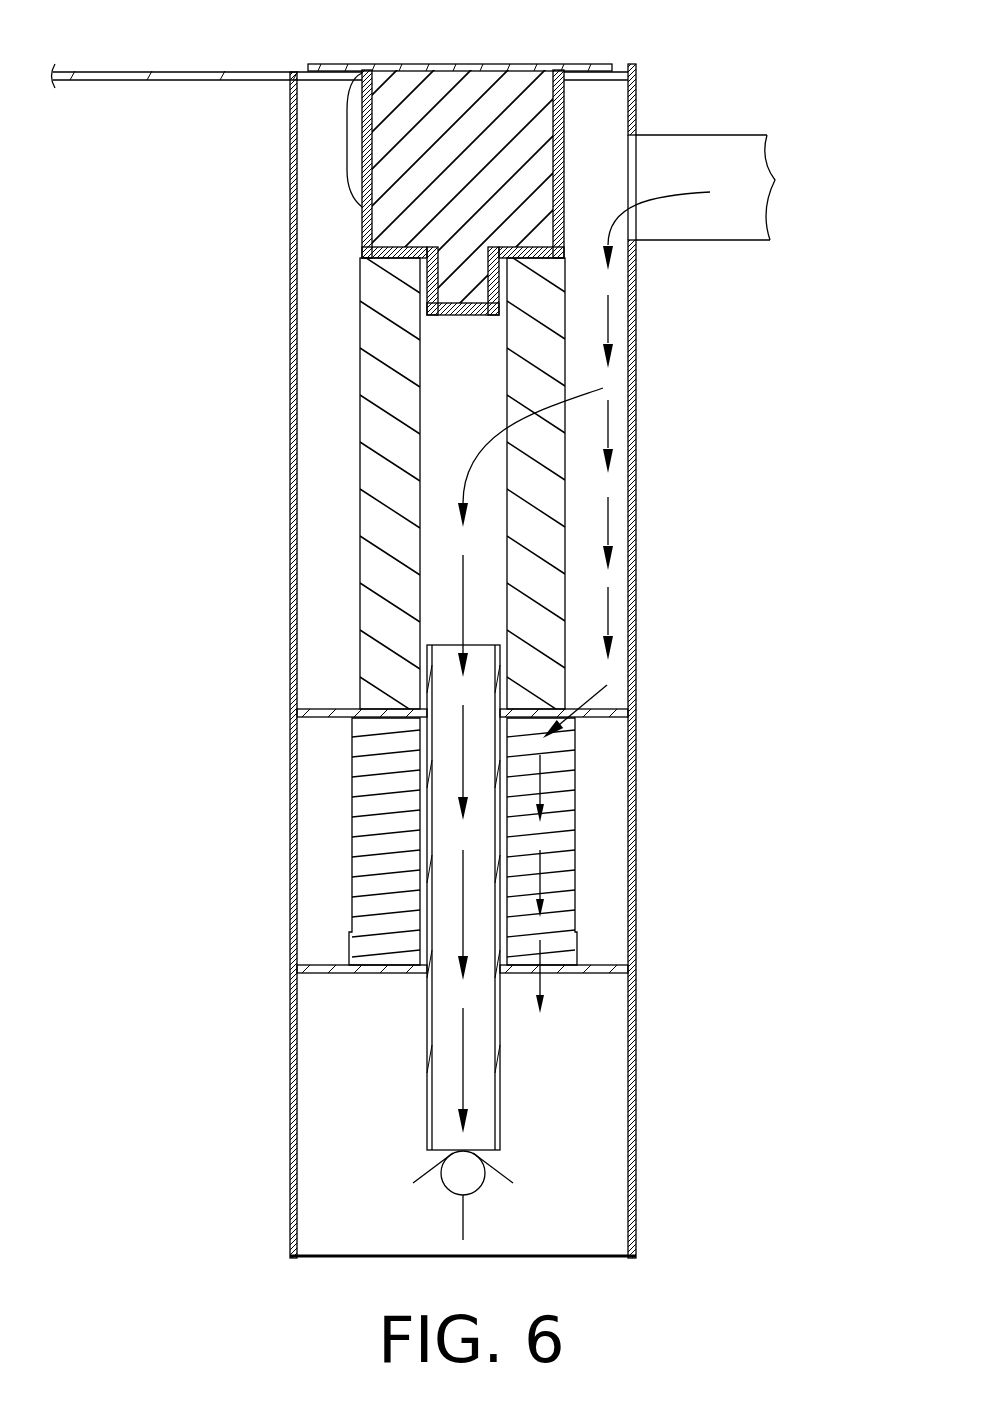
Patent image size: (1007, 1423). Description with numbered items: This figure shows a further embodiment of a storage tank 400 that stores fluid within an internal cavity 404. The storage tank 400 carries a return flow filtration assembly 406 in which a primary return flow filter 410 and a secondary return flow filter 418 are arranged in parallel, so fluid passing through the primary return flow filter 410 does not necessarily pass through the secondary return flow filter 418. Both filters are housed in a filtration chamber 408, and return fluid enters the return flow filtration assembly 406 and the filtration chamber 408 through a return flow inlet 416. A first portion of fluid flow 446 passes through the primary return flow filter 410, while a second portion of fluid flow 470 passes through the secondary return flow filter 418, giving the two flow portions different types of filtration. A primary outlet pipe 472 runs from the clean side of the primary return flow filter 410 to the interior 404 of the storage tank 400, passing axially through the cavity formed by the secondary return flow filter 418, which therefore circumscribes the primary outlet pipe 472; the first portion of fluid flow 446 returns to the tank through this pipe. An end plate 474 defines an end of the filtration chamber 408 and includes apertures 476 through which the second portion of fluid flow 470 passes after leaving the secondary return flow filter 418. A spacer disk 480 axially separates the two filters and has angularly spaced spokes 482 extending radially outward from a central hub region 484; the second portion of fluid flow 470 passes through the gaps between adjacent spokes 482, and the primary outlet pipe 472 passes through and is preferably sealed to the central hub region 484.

The storage tank 400 is at (680, 445).
The internal cavity 404 is at (217, 211).
The return flow filtration assembly 406 is at (272, 692).
The filtration chamber 408 is at (632, 386).
The primary return flow filter 410 is at (380, 370).
The return flow inlet 416 is at (707, 135).
The secondary return flow filter 418 is at (378, 830).
The first portion of fluid flow 446 is at (483, 457).
The second portion of fluid flow 470 is at (607, 612).
The primary outlet pipe 472 is at (503, 1060).
The end plate 474 is at (620, 975).
The apertures 476 is at (557, 975).
The spacer disk 480 is at (592, 718).
The spokes 482 is at (323, 720).
The central hub region 484 is at (377, 703).